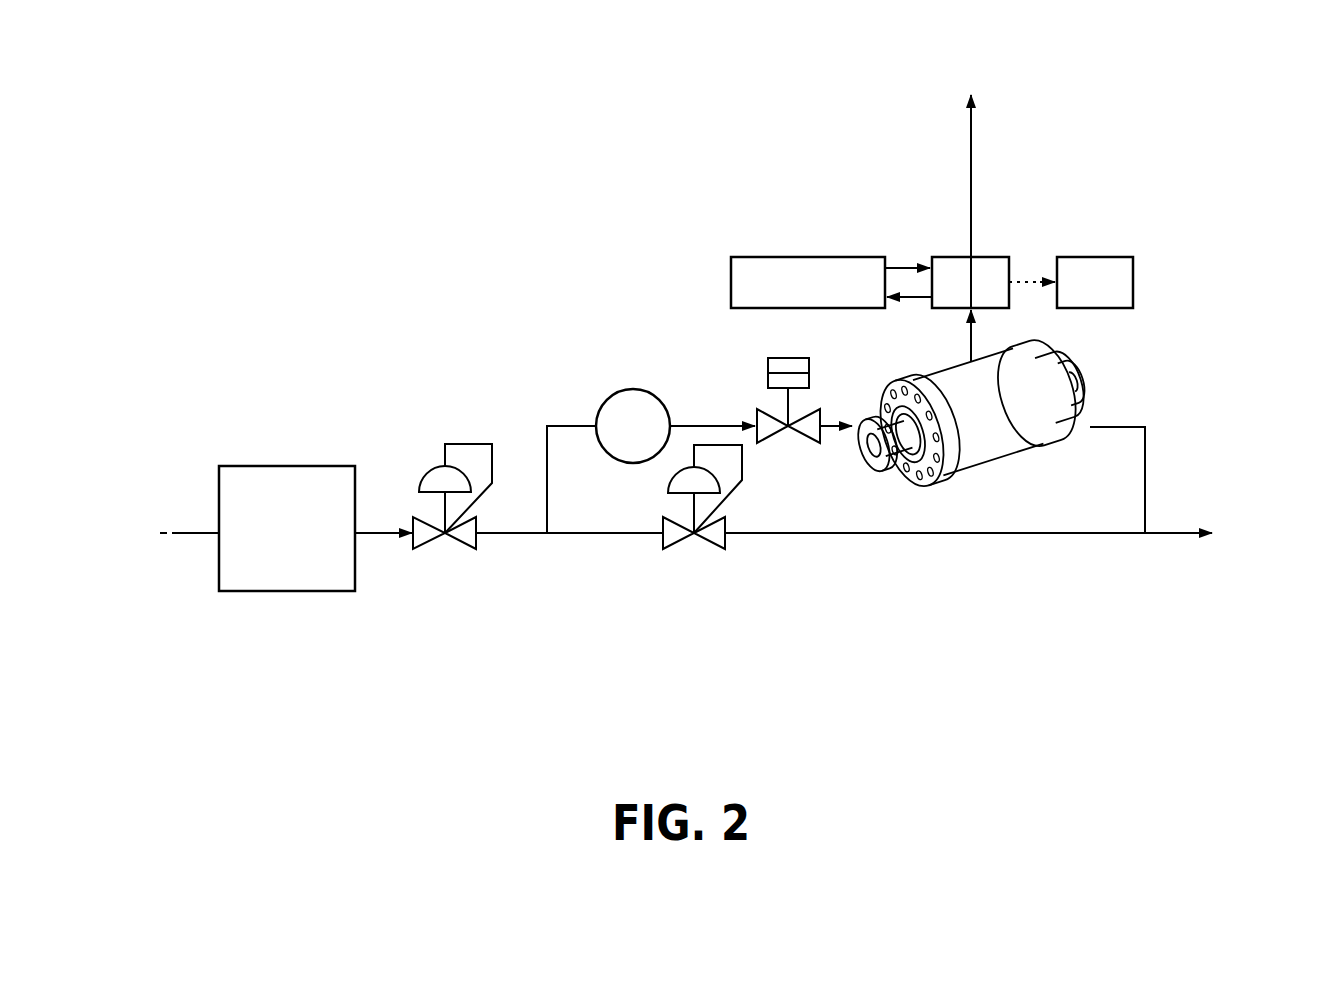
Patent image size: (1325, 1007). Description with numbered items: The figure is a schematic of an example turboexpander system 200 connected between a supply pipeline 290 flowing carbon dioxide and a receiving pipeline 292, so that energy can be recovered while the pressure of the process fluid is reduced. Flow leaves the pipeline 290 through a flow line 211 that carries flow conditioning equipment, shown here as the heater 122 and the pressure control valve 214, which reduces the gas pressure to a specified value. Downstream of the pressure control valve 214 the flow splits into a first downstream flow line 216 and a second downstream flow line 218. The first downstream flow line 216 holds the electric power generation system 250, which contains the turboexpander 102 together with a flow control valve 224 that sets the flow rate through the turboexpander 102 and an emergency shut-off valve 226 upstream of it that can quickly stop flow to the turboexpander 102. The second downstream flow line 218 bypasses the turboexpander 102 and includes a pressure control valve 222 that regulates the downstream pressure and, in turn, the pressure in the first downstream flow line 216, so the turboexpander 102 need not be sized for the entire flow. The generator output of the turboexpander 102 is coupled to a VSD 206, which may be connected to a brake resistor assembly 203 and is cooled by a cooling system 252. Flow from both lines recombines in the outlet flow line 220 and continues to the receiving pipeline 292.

The turboexpander system 200 is at (307, 197).
The flow line 211 is at (146, 522).
The pipeline 290 is at (109, 527).
The heater 122 is at (325, 466).
The pressure control valve 214 is at (476, 549).
The second downstream flow line 218 is at (562, 536).
The first downstream flow line 216 is at (565, 426).
The flow control valve 224 is at (632, 389).
The emergency shut-off valve 226 is at (758, 409).
The pressure control valve 222 is at (725, 548).
The turboexpander 102 is at (1081, 380).
The outlet flow line 220 is at (1020, 506).
The receiving pipeline 292 is at (1270, 525).
The electric power generation system 250 is at (1084, 160).
The cooling system 252 is at (807, 256).
The VSD 206 is at (1000, 256).
The brake resistor assembly 203 is at (1103, 256).